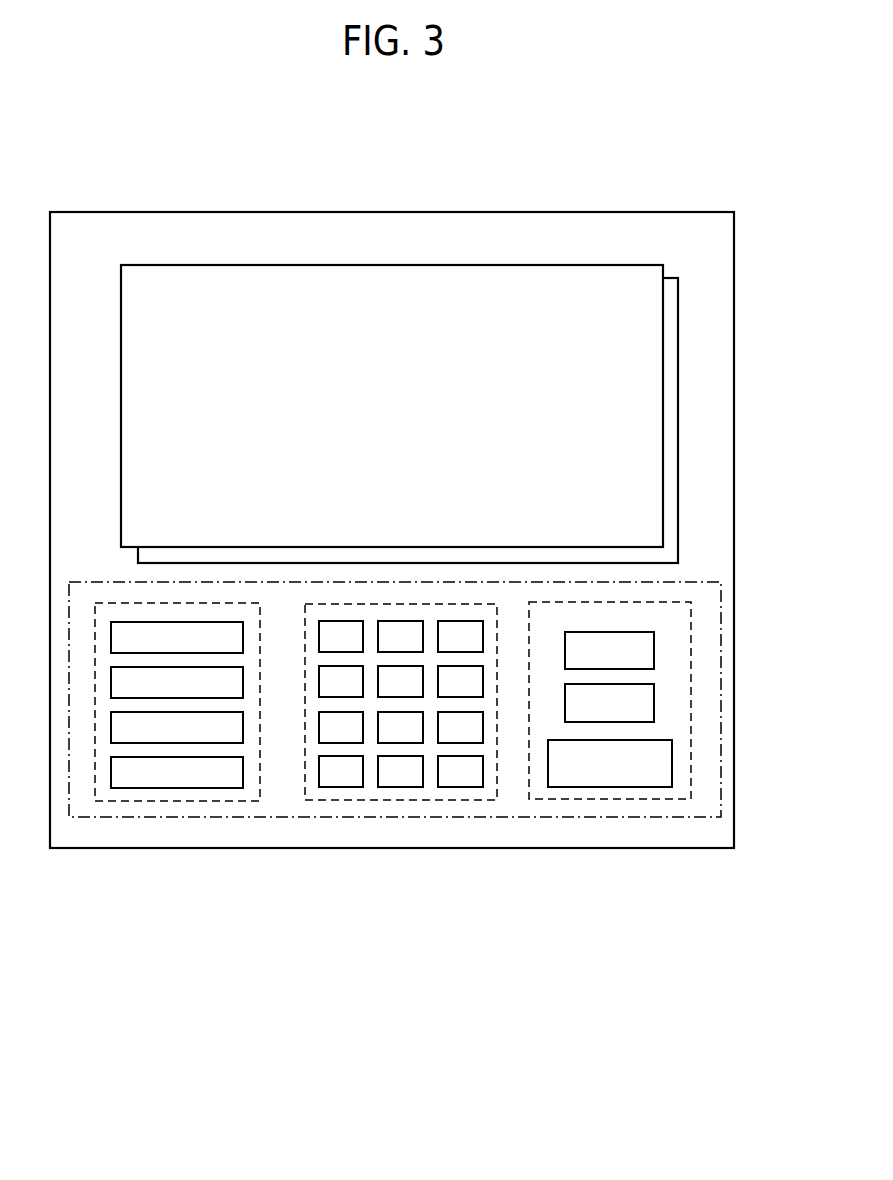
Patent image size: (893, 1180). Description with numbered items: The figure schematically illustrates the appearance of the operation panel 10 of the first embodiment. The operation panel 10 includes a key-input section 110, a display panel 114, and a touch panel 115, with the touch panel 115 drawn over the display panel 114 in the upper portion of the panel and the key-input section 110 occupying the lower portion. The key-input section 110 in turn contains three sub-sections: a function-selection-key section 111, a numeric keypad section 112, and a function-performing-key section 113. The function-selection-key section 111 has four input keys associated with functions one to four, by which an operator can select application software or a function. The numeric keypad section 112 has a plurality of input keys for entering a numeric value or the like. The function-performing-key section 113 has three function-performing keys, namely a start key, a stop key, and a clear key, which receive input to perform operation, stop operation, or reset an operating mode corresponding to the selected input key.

The operation panel 10 is at (138, 211).
The key-input section 110 is at (281, 818).
The function-selection-key section 111 is at (175, 801).
The numeric keypad section 112 is at (398, 801).
The function-performing-key section 113 is at (615, 800).
The display panel 114 is at (680, 291).
The touch panel 115 is at (402, 265).